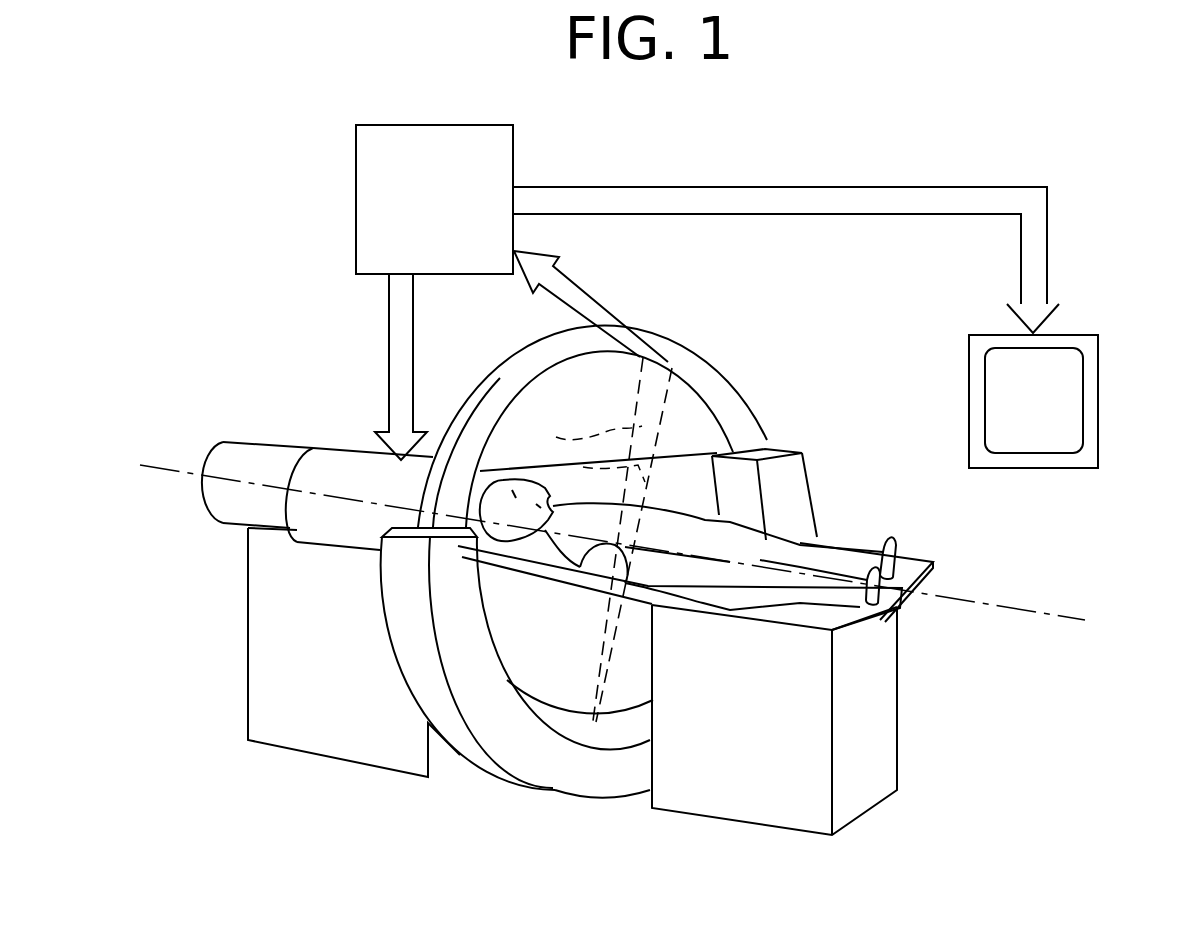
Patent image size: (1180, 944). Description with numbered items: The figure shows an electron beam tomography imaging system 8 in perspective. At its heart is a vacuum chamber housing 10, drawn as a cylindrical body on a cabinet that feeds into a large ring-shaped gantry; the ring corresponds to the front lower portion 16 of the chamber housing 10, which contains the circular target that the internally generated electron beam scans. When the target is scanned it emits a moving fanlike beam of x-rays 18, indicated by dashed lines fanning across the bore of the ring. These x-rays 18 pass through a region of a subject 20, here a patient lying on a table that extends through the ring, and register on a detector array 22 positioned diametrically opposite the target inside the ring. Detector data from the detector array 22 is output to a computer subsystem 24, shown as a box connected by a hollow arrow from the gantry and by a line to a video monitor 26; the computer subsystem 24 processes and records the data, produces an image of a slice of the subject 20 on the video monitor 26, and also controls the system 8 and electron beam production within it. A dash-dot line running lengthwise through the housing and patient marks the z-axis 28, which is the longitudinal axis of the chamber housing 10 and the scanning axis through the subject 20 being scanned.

The imaging system 8 is at (914, 146).
The vacuum chamber housing 10 is at (362, 448).
The front lower portion 16 is at (600, 775).
The x-rays 18 is at (560, 448).
The subject 20 is at (818, 542).
The detector array 22 is at (536, 384).
The computer subsystem 24 is at (357, 183).
The video monitor 26 is at (1100, 418).
The z-axis 28 is at (1000, 598).